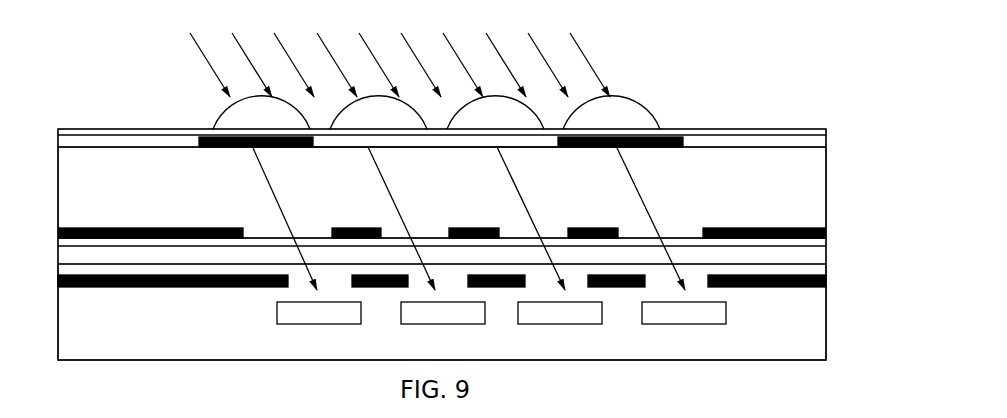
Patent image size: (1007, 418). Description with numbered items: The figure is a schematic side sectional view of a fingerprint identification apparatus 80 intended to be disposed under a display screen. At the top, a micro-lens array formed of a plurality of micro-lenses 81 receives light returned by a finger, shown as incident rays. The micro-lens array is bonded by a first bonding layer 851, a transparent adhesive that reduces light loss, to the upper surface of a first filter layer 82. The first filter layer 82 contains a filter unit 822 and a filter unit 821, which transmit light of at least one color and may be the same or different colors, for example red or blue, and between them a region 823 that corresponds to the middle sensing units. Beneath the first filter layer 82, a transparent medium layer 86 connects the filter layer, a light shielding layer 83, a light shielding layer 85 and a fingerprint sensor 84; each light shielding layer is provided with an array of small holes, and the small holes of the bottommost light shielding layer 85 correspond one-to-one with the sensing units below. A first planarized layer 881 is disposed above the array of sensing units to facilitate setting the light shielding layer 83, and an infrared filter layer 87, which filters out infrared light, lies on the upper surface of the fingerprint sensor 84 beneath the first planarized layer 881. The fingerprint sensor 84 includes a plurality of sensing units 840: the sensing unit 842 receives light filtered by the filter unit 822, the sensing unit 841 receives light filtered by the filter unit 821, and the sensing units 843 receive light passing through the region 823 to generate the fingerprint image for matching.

The fingerprint identification apparatus 80 is at (73, 29).
The micro-lens 81 is at (627, 108).
The first bonding layer 851 is at (818, 134).
The first filter layer 82 is at (827, 137).
The filter unit 821 is at (672, 148).
The filter unit 822 is at (243, 149).
The region 823 is at (455, 142).
The transparent medium layer 86 is at (810, 200).
The light shielding layer 83 is at (827, 228).
The first planarized layer 881 is at (820, 242).
The infrared filter layer 87 is at (72, 254).
The light shielding layer 85 is at (57, 276).
The fingerprint sensor 84 is at (798, 328).
The sensing units 840 is at (533, 313).
The sensing unit 841 is at (684, 313).
The sensing unit 842 is at (319, 313).
The sensing units 843 is at (501, 313).